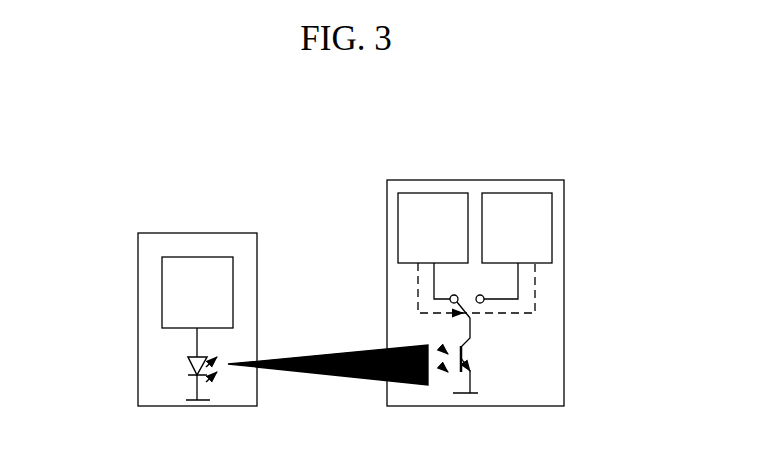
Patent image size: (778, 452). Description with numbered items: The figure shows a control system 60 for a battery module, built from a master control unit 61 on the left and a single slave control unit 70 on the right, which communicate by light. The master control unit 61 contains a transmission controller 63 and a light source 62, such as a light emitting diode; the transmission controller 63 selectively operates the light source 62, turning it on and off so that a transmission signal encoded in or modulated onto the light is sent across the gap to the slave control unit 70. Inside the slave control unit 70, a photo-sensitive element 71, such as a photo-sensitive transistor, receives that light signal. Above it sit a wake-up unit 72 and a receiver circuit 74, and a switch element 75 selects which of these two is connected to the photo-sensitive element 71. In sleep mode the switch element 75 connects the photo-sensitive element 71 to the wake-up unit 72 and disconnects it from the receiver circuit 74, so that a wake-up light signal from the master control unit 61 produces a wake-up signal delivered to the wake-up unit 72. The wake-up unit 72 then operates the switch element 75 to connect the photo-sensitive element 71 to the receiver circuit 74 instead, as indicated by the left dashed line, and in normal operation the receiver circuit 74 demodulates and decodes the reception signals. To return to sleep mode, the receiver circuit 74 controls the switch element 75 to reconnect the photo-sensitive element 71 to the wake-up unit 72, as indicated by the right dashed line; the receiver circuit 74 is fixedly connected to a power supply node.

The control system 60 is at (278, 213).
The master control unit 61 is at (138, 298).
The light source 62 is at (182, 372).
The transmission controller 63 is at (181, 305).
The slave control unit 70 is at (565, 242).
The photo-sensitive element 71 is at (478, 355).
The wake-up unit 72 is at (450, 241).
The receiver circuit 74 is at (534, 241).
The switch element 75 is at (482, 313).